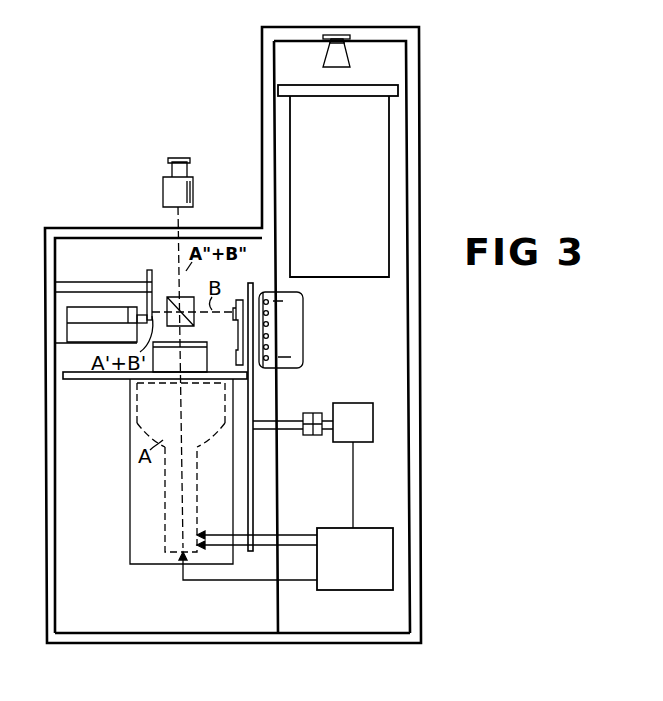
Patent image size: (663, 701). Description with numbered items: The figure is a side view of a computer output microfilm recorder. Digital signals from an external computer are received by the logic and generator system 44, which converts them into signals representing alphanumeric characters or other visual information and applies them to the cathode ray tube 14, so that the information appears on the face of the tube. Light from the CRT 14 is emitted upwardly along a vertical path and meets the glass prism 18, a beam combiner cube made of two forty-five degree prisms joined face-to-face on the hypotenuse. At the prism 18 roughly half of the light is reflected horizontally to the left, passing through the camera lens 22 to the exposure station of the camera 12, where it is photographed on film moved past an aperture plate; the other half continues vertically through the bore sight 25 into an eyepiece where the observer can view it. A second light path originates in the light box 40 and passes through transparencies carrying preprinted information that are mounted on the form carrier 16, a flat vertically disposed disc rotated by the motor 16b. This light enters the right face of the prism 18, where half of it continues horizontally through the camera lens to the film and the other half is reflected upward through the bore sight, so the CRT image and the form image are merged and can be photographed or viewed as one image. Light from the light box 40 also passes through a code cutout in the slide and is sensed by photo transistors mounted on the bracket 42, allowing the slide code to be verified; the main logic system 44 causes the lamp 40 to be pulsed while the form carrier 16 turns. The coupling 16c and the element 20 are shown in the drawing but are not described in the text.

The camera 12 is at (70, 315).
The cathode ray tube 14 is at (137, 423).
The form carrier 16 is at (243, 292).
The motor 16b is at (362, 403).
The coupling 16c is at (312, 436).
The glass prism 18 is at (175, 297).
The plate 20 is at (148, 300).
The camera lens 22 is at (140, 308).
The bore sight 25 is at (193, 183).
The light box 40 is at (301, 366).
The bracket 42 is at (235, 350).
The logic and generator system 44 is at (355, 559).